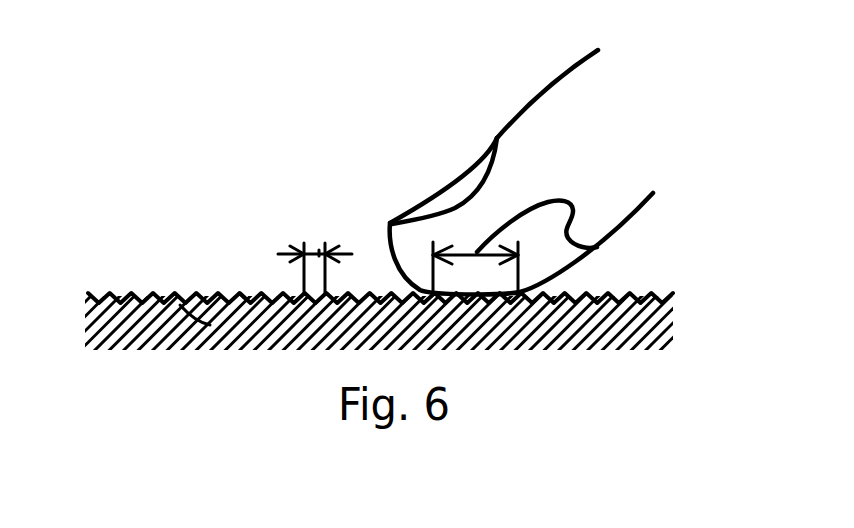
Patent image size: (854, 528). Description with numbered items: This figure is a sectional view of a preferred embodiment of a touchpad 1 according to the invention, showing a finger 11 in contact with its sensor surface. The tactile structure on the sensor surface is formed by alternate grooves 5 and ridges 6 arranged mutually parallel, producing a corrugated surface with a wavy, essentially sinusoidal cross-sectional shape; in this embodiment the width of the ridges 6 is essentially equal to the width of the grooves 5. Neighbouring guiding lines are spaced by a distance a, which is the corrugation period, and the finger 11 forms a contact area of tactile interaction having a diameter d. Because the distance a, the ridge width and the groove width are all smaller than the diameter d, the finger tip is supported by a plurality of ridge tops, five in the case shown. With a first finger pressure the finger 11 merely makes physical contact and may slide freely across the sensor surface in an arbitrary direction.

The touchpad 1 is at (180, 305).
The grooves 5 is at (253, 297).
The ridges 6 is at (242, 297).
The finger 11 is at (557, 158).
The distance between neighbouring guiding lines a is at (319, 254).
The diameter of the contact area d is at (597, 247).